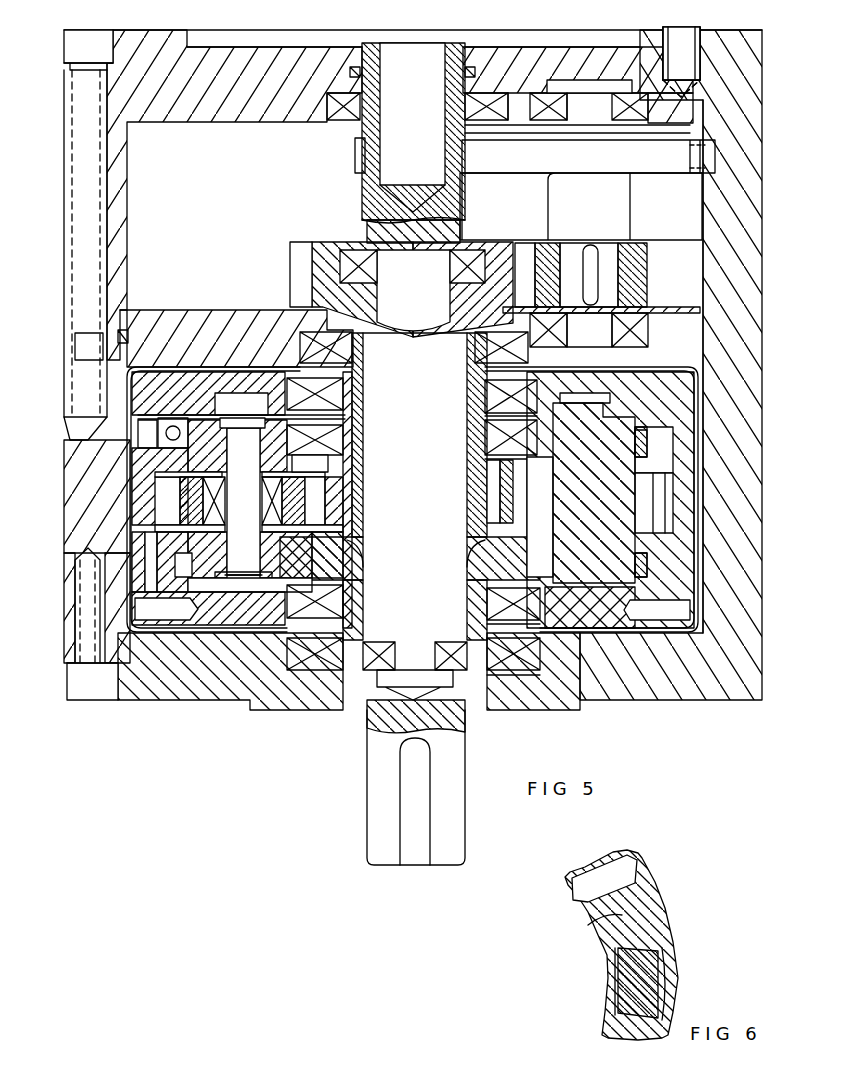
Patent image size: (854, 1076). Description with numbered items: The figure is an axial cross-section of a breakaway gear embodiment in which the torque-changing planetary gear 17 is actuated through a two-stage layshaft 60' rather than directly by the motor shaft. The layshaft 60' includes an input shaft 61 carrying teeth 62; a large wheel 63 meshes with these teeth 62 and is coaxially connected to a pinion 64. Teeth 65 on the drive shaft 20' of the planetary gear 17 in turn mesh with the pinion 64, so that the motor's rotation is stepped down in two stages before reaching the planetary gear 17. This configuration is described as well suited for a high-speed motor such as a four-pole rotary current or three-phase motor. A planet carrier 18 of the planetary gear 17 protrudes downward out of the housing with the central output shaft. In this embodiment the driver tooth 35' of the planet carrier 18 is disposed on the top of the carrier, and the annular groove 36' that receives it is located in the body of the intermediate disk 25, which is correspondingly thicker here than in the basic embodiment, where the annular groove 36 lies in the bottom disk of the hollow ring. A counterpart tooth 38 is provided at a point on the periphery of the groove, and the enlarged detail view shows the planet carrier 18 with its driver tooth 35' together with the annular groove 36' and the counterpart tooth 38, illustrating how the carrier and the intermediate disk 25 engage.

In FIG. 5, the planetary gear 17 is at (215, 551).
In FIG. 5, the planet carrier 18 is at (610, 512).
In FIG. 6, the planet carrier 18 is at (605, 1016).
In FIG. 5, the drive shaft 20' is at (405, 272).
In FIG. 5, the intermediate disk 25 is at (627, 370).
In FIG. 5, the driver tooth 35' is at (700, 490).
In FIG. 6, the driver tooth 35' is at (669, 984).
In FIG. 5, the annular groove 36 is at (660, 499).
In FIG. 6, the annular groove 36' is at (585, 884).
In FIG. 6, the counterpart tooth 38 is at (612, 918).
In FIG. 5, the two-stage layshaft 60' is at (630, 206).
In FIG. 5, the input shaft 61 is at (455, 55).
In FIG. 5, the teeth 62 is at (355, 158).
In FIG. 5, the large wheel 63 is at (698, 155).
In FIG. 5, the pinion 64 is at (548, 258).
In FIG. 5, the teeth 65 is at (298, 285).